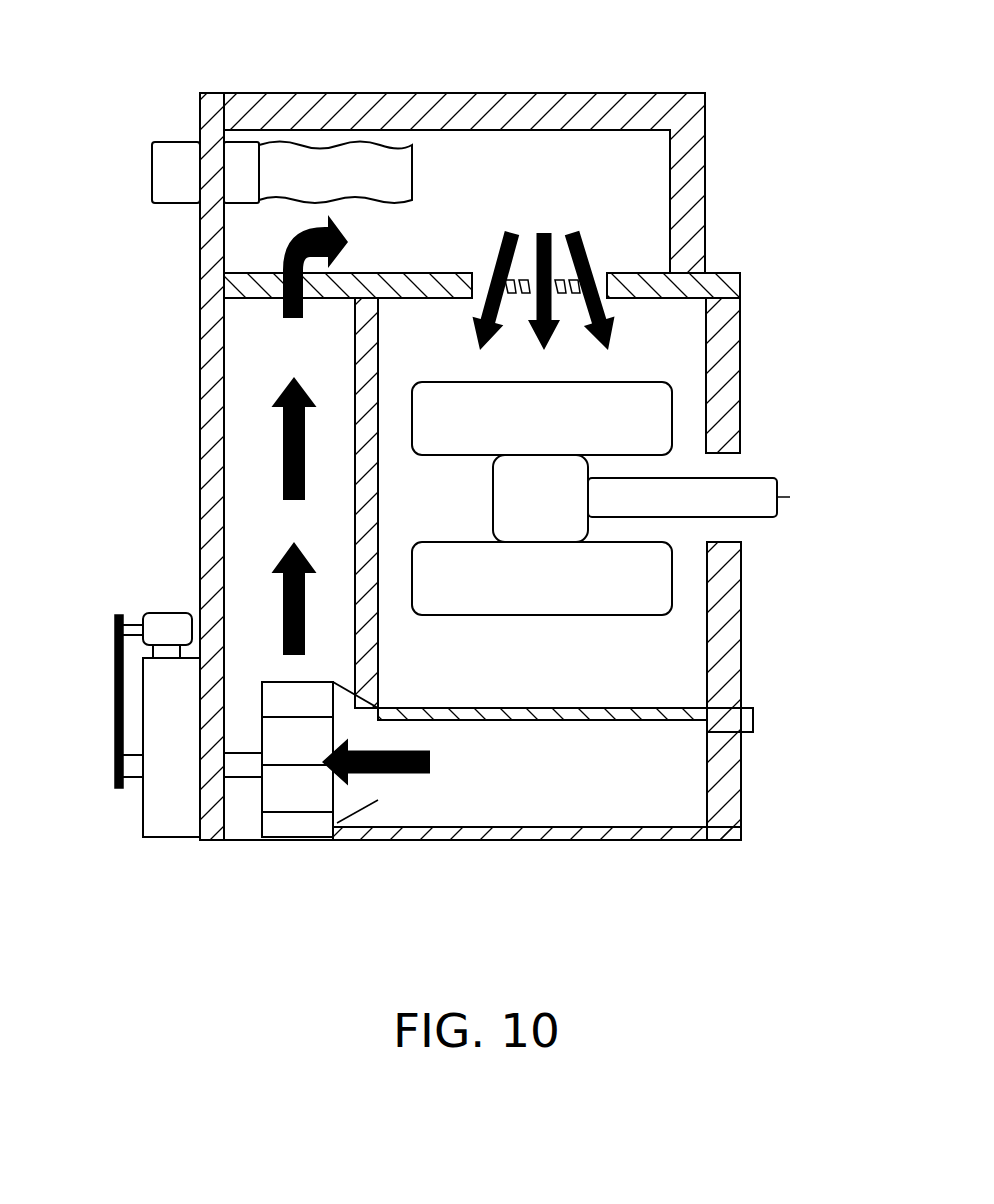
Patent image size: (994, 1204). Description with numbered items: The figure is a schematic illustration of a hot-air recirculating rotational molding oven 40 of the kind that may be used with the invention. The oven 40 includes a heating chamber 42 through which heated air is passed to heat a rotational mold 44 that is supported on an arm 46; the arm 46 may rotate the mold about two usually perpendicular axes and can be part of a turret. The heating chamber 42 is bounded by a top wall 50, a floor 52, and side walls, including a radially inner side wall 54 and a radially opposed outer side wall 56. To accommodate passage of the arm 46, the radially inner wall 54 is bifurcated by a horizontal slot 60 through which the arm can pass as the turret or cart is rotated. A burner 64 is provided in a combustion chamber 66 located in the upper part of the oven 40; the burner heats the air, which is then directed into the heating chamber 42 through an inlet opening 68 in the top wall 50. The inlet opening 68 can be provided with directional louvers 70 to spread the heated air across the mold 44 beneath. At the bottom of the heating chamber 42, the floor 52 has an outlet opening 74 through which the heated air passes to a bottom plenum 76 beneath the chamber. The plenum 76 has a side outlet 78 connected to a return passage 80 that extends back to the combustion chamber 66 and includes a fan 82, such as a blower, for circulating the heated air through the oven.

The rotational molding oven 40 is at (660, 60).
The heating chamber 42 is at (675, 342).
The rotational mold 44 is at (672, 575).
The arm 46 is at (752, 478).
The top wall 50 is at (640, 282).
The floor 52 is at (680, 705).
The radially inner side wall 54 is at (725, 373).
The radially outer side wall 56 is at (367, 345).
The horizontal slot 60 is at (740, 532).
The burner 64 is at (152, 173).
The combustion chamber 66 is at (464, 144).
The inlet opening 68 is at (488, 300).
The directional louvers 70 is at (560, 290).
The outlet opening 74 is at (600, 722).
The bottom plenum 76 is at (565, 830).
The side outlet 78 is at (380, 783).
The return passage 80 is at (245, 462).
The fan 82 is at (262, 815).